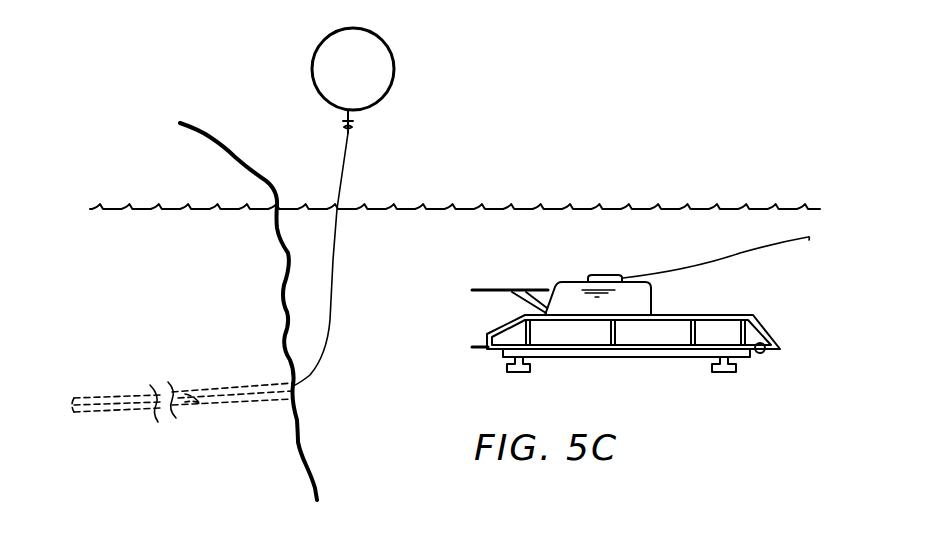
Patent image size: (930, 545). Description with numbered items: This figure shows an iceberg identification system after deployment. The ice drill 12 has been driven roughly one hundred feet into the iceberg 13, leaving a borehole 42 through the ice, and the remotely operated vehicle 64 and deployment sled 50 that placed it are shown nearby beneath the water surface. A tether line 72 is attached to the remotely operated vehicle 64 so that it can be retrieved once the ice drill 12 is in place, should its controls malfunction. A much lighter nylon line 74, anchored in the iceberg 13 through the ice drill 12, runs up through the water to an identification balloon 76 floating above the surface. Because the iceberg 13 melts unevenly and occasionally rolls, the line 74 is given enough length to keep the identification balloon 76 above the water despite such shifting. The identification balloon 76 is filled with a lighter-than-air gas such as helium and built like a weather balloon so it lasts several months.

The ice drill 12 is at (122, 402).
The iceberg 13 is at (215, 263).
The borehole 42 is at (223, 388).
The deployment sled 50 is at (725, 317).
The remotely operated vehicle 64 is at (577, 296).
The tether line 72 is at (743, 256).
The line 74 is at (335, 270).
The identification balloon 76 is at (365, 80).